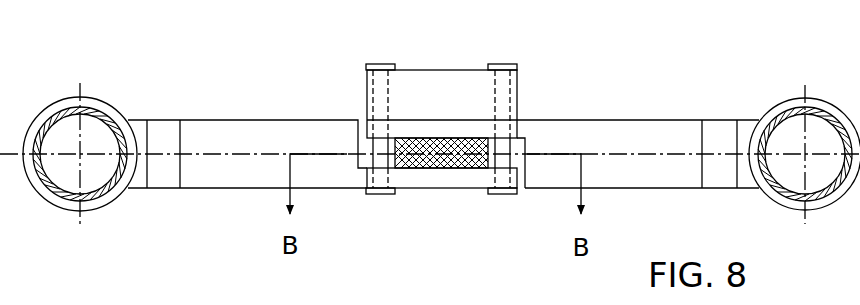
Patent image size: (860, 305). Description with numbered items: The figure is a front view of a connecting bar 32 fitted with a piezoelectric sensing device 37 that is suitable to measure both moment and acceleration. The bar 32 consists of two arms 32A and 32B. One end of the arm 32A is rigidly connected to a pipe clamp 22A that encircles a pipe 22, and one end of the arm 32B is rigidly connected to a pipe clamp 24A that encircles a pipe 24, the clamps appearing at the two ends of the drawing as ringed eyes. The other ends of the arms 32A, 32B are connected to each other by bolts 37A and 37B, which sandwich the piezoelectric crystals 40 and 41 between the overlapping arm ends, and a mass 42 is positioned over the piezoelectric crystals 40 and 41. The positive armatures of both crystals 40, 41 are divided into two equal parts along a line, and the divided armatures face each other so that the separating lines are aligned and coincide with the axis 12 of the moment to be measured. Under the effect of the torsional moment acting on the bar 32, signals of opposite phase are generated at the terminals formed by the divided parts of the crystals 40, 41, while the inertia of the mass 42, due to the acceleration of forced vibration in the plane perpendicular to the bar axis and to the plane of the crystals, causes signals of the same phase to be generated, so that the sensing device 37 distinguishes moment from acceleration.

The axis 12 is at (790, 156).
The pipe 22 is at (107, 115).
The pipe clamp 22A is at (43, 110).
The pipe 24 is at (780, 118).
The pipe clamp 24A is at (830, 100).
The connecting bar 32 is at (221, 214).
The arm 32A is at (250, 118).
The arm 32B is at (650, 118).
The piezoelectric sensing device 37 is at (447, 203).
The bolt 37A is at (365, 100).
The bolt 37B is at (505, 90).
The piezoelectric crystal 40 is at (478, 140).
The piezoelectric crystal 41 is at (427, 170).
The mass 42 is at (438, 80).